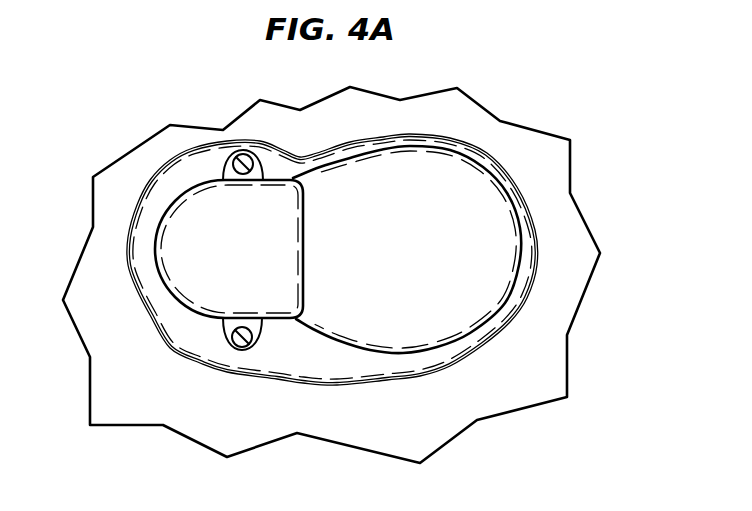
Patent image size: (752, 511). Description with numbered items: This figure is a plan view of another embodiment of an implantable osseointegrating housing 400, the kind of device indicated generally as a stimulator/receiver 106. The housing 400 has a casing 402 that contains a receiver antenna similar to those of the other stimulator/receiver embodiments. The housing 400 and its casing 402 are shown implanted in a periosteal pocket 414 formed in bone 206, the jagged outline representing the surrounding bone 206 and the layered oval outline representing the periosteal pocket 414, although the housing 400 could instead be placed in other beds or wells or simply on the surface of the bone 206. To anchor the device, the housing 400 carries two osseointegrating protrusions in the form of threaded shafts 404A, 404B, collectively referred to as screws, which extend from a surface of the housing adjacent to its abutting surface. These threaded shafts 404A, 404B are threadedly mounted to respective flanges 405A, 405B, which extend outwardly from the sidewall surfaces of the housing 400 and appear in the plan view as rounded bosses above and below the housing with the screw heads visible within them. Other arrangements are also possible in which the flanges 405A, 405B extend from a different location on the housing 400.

The stimulator/receiver 106 is at (567, 110).
The bone 206 is at (103, 397).
The implantable osseointegrating housing 400 is at (172, 298).
The casing 402 is at (455, 345).
The threaded shaft 404A is at (241, 153).
The threaded shaft 404B is at (254, 333).
The flange 405A is at (224, 170).
The flange 405B is at (222, 330).
The periosteal pocket 414 is at (452, 150).